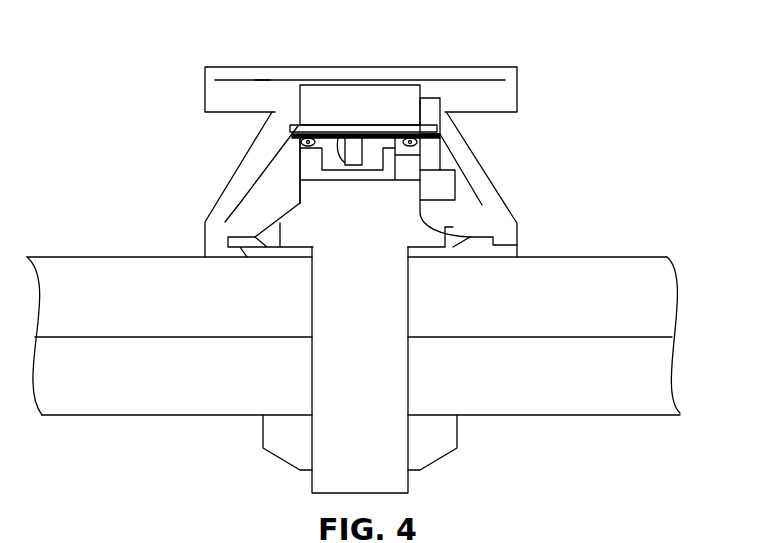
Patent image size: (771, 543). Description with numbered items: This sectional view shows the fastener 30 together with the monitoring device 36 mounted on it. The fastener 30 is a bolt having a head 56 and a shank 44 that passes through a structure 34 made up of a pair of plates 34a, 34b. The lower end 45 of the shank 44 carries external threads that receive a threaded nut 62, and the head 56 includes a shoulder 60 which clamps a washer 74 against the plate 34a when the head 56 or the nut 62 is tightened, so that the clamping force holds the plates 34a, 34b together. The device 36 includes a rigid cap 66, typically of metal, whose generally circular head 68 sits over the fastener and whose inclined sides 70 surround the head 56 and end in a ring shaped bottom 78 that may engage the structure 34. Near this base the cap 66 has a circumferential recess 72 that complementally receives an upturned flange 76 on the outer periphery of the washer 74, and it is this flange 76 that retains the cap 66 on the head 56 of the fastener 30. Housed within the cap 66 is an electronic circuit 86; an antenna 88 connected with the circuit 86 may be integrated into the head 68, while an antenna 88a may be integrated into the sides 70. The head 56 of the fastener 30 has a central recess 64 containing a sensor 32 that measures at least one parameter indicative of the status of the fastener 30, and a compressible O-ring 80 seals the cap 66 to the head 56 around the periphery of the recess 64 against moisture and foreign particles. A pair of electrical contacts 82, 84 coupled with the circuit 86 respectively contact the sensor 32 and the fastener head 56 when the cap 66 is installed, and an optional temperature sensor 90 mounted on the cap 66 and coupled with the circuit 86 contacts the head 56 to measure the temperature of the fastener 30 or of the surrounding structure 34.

The fastener 30 is at (298, 226).
The sensor 32 is at (372, 136).
The structure 34 is at (380, 339).
The plate 34a is at (648, 272).
The plate 34b is at (383, 427).
The device 36 is at (188, 108).
The shank 44 is at (383, 375).
The lower end 45 is at (333, 452).
The head 56 is at (300, 203).
The shoulder 60 is at (286, 250).
The nut 62 is at (280, 432).
The central recess 64 is at (470, 168).
The cap 66 is at (505, 100).
The head 68 is at (518, 73).
The inclined sides 70 is at (462, 162).
The circumferential recess 72 is at (205, 232).
The washer 74 is at (443, 252).
The upturned flange 76 is at (472, 236).
The ring shaped bottom 78 is at (219, 272).
The O-ring 80 is at (300, 138).
The electrical contact 82 is at (312, 134).
The electrical contact 84 is at (388, 156).
The electronic circuit 86 is at (410, 80).
The antenna 88 is at (262, 80).
The antenna 88a is at (257, 168).
The temperature sensor 90 is at (482, 203).